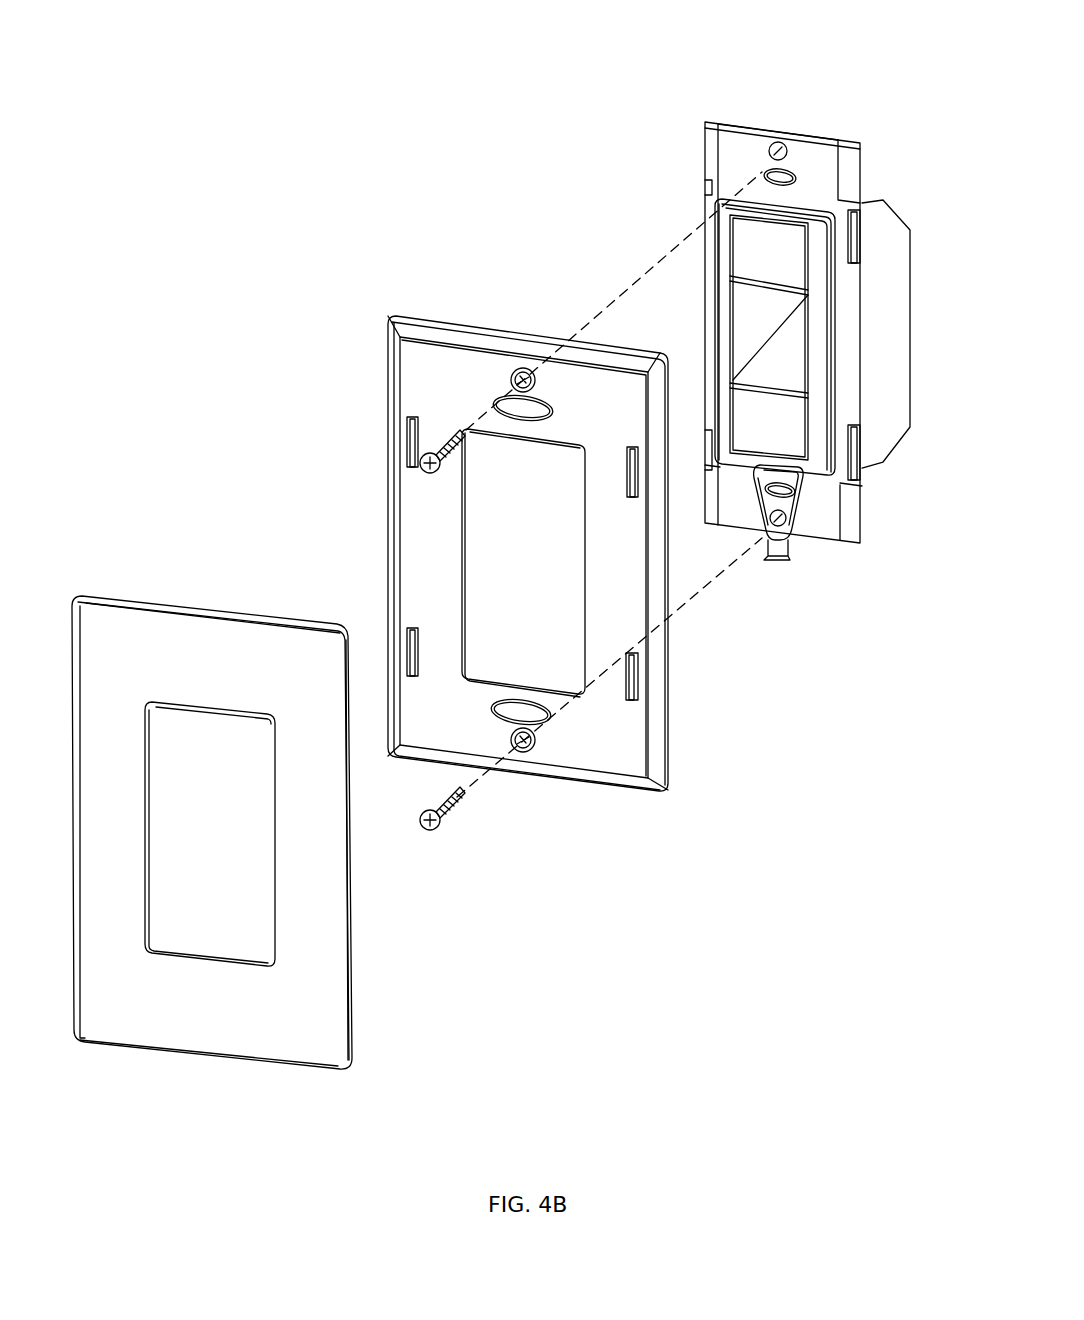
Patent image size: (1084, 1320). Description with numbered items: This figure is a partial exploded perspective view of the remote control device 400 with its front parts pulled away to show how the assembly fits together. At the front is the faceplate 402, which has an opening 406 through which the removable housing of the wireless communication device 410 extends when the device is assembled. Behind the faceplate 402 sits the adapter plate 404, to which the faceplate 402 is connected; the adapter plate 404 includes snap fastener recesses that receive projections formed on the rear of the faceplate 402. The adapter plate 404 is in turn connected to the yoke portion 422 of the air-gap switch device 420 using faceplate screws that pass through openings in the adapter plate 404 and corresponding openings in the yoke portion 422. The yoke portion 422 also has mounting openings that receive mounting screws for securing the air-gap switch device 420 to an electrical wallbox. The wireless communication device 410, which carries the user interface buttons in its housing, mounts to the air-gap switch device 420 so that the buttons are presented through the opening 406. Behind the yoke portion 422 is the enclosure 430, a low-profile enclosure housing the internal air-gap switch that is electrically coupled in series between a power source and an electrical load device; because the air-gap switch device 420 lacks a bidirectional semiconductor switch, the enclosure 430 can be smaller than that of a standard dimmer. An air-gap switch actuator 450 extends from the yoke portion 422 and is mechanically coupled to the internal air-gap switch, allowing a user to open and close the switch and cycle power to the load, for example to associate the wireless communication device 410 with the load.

The remote control device 400 is at (335, 160).
The faceplate 402 is at (155, 640).
The adapter plate 404 is at (628, 745).
The opening 406 is at (205, 965).
The wireless communication device 410 is at (815, 312).
The air-gap switch device 420 is at (690, 160).
The yoke portion 422 is at (740, 142).
The enclosure 430 is at (880, 432).
The air-gap switch actuator 450 is at (768, 550).